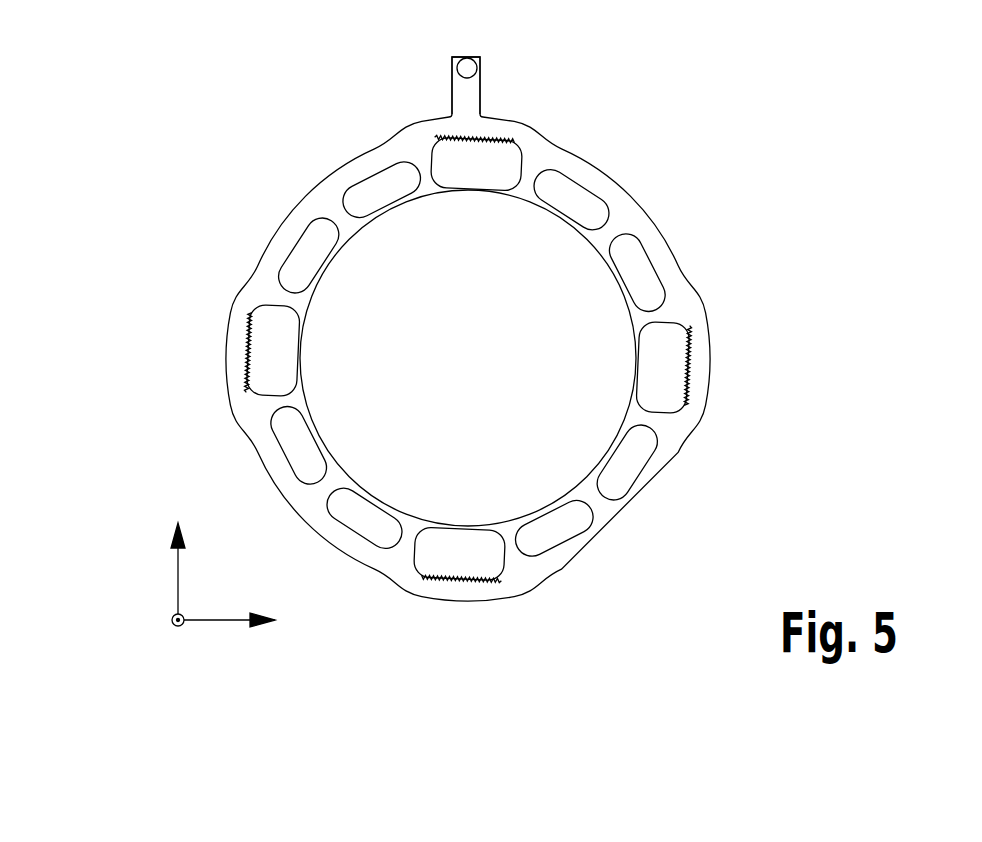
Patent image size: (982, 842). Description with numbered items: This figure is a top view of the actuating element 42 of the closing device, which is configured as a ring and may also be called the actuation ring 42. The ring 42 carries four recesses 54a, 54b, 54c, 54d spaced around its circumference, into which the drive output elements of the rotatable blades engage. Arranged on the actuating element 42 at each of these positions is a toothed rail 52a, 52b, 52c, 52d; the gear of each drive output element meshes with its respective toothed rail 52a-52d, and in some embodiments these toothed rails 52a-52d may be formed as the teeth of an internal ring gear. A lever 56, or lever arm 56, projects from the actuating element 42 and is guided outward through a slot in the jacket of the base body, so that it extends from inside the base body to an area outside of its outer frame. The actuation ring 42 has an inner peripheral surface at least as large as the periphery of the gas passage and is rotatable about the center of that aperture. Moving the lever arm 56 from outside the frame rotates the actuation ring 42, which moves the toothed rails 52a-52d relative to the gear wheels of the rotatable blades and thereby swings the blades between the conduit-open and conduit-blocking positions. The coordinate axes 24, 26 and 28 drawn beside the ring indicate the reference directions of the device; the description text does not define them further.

The actuating element 42 is at (680, 134).
The lever arm 56 is at (473, 92).
The toothed rail 52a is at (684, 358).
The toothed rail 52b is at (475, 142).
The toothed rail 52c is at (250, 357).
The toothed rail 52d is at (466, 577).
The recess 54a is at (690, 328).
The recess 54b is at (432, 125).
The recess 54c is at (245, 393).
The recess 54d is at (500, 590).
The x-axis direction 24 is at (205, 622).
The y-axis direction 26 is at (177, 583).
The z-axis direction 28 is at (174, 627).